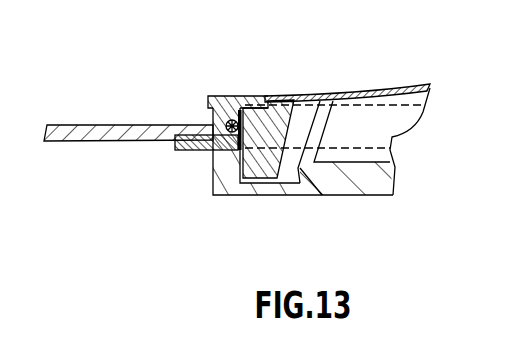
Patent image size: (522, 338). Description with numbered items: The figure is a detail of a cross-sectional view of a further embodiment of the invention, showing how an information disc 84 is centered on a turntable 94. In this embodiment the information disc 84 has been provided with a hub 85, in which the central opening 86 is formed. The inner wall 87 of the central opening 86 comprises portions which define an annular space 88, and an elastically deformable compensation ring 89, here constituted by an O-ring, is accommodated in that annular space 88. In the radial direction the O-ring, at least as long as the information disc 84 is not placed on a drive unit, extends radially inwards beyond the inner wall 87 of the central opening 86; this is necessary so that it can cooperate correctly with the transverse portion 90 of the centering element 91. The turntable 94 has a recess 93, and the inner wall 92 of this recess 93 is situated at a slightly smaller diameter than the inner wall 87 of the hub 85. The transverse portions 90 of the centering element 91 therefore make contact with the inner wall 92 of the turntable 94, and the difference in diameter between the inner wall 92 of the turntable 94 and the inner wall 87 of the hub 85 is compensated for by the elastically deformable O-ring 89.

The information disc 84 is at (141, 120).
The hub 85 is at (210, 112).
The central opening 86 is at (390, 128).
The inner wall 87 is at (238, 167).
The annular space 88 is at (208, 150).
The elastically deformable compensation ring 89 is at (238, 121).
The transverse portion 90 is at (300, 172).
The centering element 91 is at (388, 84).
The inner wall 92 is at (246, 156).
The recess 93 is at (276, 134).
The turntable 94 is at (368, 179).